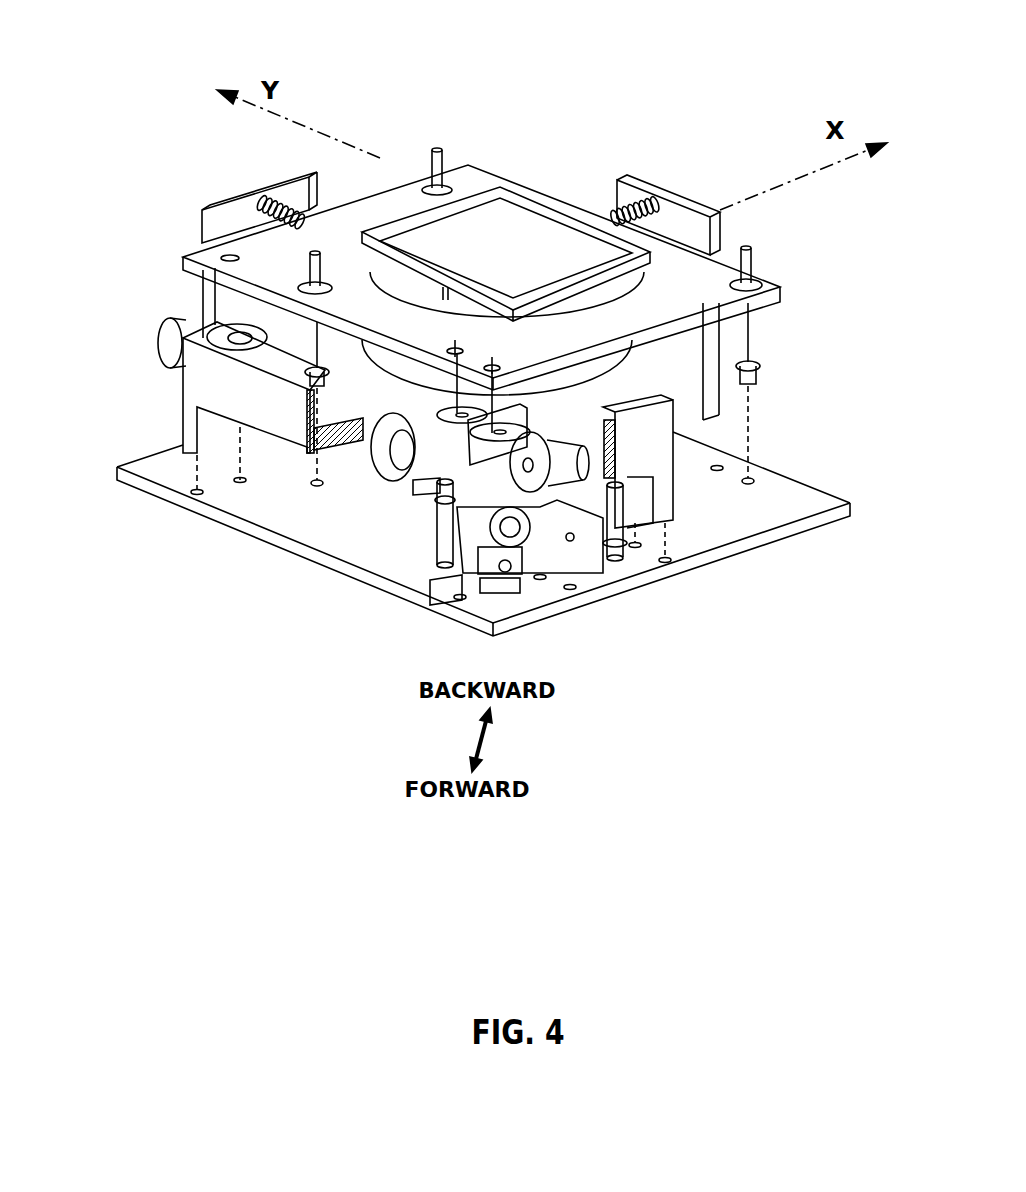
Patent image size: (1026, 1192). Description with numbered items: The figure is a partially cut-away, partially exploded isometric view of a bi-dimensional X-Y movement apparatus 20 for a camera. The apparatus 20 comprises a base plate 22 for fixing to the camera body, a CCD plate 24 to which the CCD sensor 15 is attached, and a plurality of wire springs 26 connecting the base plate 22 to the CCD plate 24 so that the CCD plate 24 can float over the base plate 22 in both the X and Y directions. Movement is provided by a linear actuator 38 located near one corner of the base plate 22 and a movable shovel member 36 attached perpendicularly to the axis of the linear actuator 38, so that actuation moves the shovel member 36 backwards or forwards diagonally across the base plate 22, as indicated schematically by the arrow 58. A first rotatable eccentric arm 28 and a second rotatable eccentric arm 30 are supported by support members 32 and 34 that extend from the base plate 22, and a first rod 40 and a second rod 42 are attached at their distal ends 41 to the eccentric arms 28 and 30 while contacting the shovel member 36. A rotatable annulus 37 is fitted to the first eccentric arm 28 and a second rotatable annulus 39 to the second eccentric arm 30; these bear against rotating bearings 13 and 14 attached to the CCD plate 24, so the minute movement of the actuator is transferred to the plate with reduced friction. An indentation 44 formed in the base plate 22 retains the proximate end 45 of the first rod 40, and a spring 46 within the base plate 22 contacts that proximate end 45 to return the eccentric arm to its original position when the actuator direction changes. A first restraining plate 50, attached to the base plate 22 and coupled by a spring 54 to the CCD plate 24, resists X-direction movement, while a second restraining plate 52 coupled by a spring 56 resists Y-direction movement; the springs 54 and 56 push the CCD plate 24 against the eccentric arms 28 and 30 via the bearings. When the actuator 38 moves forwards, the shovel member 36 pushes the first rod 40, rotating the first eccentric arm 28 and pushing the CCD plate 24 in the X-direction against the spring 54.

The X-Y movement apparatus 20 is at (651, 88).
The wire springs 26 is at (316, 256).
The CCD plate 24 is at (480, 180).
The CCD sensor 15 is at (533, 223).
The spring 54 is at (650, 203).
The first restraining plate 50 is at (683, 202).
The second restraining plate 52 is at (223, 207).
The spring 56 is at (273, 200).
The rotating bearing 13 is at (206, 313).
The rotatable annulus 37 is at (177, 343).
The support member 32 is at (193, 375).
The first rotatable eccentric arm 28 is at (350, 412).
The second rotatable eccentric arm 30 is at (590, 447).
The support member 34 is at (665, 507).
The base plate 22 is at (440, 546).
The rotating bearing 14 is at (470, 445).
The distal end 41 is at (400, 520).
The first rod 40 is at (383, 533).
The proximate end 45 is at (415, 590).
The spring 46 is at (440, 592).
The indentation 44 is at (447, 582).
The second rod 42 is at (633, 560).
The second rotatable annulus 39 is at (590, 550).
The movable shovel member 36 is at (563, 563).
The linear actuator 38 is at (540, 577).
The arrow 58 is at (490, 740).